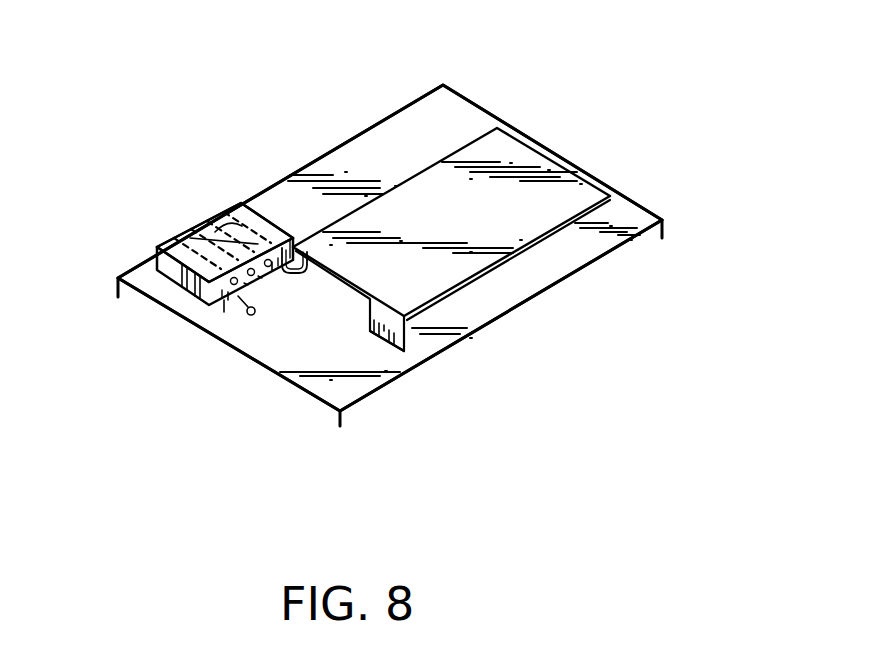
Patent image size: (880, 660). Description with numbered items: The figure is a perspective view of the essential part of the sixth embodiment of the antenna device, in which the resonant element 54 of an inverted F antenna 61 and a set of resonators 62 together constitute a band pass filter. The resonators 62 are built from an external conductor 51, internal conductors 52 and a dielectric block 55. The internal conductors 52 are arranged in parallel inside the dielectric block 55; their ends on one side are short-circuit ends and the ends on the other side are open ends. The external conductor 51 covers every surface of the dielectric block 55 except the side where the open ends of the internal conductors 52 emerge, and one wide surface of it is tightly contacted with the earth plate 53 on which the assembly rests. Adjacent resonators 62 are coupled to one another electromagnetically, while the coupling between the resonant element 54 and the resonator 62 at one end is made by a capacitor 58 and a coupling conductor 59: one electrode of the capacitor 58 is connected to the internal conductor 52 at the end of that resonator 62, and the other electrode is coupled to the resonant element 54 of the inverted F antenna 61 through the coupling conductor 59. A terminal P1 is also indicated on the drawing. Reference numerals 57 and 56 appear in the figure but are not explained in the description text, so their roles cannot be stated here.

The terminal P1 is at (215, 325).
The earth plate 53 is at (402, 130).
The inverted F antenna 61 is at (462, 130).
The resonant element 54 is at (525, 183).
The coupling conductor 59 is at (394, 373).
The dielectric block 55 is at (212, 322).
The external conductor 51 is at (235, 213).
The resonators 62 is at (137, 203).
The capacitor 58 is at (300, 276).
The internal conductors 52 is at (223, 322).
The wire 57 is at (226, 305).
The wire loop 56 is at (233, 304).